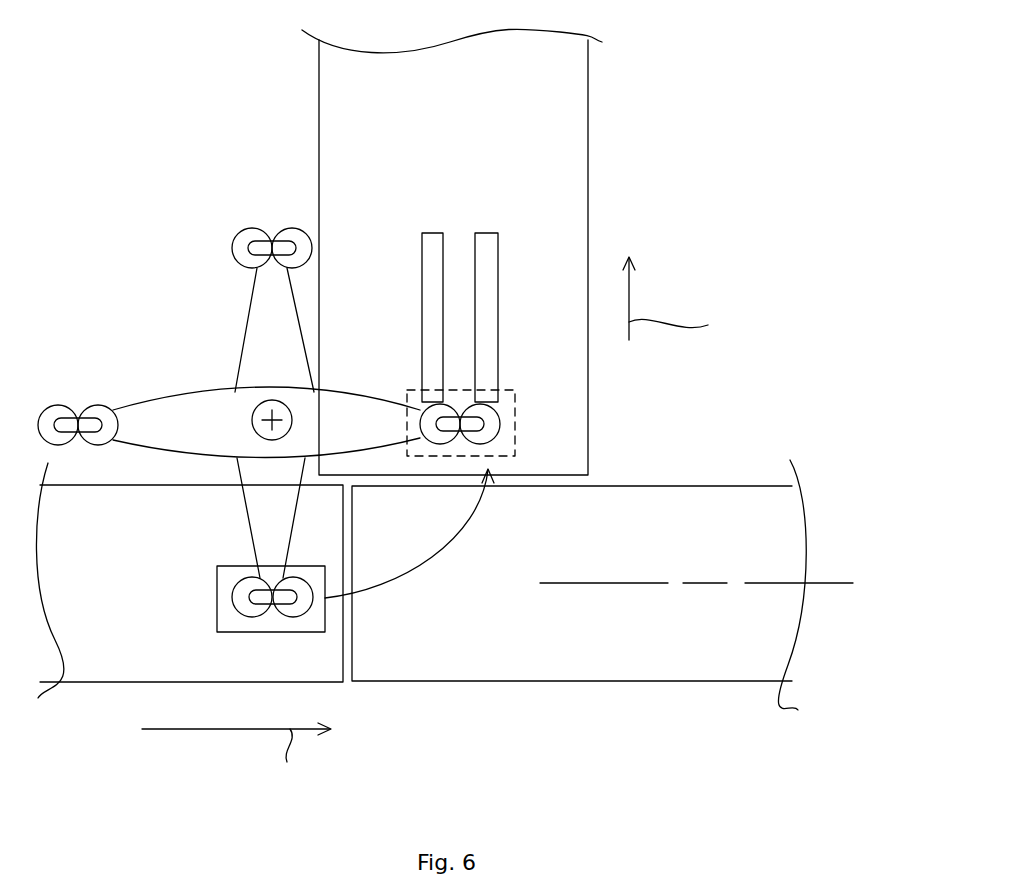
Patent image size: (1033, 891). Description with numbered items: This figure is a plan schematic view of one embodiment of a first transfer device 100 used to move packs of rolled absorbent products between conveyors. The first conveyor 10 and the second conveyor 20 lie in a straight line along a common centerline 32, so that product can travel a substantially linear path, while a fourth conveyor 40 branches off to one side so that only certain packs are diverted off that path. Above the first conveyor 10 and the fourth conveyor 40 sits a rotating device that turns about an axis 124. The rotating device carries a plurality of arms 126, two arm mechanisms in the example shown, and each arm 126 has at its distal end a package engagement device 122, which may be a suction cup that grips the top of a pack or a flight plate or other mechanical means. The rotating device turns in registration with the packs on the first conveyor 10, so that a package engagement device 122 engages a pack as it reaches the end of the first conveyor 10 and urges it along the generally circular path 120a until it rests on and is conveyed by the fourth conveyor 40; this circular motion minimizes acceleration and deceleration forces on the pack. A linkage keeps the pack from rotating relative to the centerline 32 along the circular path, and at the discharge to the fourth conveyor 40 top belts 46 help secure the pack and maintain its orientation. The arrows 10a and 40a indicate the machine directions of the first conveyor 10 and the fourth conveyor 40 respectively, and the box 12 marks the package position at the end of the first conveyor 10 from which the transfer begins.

The first transfer device 100 is at (757, 160).
The first conveyor 10 is at (95, 667).
The conveying direction of first conveyor 10a is at (178, 729).
The gripper of first conveyor 12 is at (226, 592).
The second conveyor 20 is at (705, 662).
The common centerline 32 is at (822, 583).
The fourth conveyor 40 is at (560, 449).
The conveying direction of transfer conveyor 40a is at (629, 298).
The top belts 46 is at (432, 243).
The path 120a is at (442, 558).
The package engagement devices 122 is at (243, 238).
The axis 124 is at (260, 427).
The arms 126 is at (193, 410).